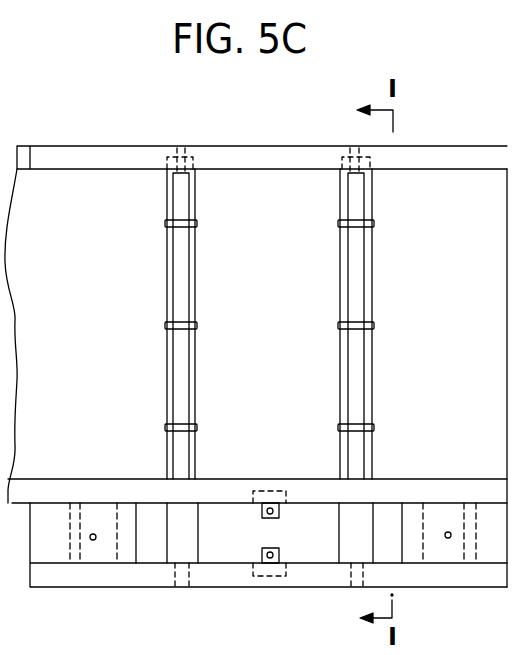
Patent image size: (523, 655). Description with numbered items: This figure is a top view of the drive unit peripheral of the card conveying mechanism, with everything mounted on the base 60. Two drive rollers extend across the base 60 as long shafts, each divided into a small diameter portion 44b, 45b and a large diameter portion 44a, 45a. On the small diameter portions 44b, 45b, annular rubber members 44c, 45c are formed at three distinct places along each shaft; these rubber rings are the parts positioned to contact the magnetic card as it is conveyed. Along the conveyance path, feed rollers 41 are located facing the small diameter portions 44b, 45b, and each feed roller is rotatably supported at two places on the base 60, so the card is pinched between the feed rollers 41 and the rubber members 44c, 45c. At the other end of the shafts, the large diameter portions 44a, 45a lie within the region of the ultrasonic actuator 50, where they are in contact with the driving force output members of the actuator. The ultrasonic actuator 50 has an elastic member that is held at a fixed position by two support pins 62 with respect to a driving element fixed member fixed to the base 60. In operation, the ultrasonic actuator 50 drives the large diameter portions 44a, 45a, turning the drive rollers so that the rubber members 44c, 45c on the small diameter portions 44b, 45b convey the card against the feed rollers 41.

The base 60 is at (80, 183).
The small diameter portion 45b is at (178, 194).
The small diameter portion 44b is at (355, 197).
The feed roller 41 is at (197, 160).
The annular rubber member 45c is at (199, 426).
The annular rubber member 44c is at (376, 427).
The large diameter portion 45a is at (173, 537).
The large diameter portion 44a is at (348, 533).
The support pin 62 is at (263, 507).
The ultrasonic actuator 50 is at (297, 537).